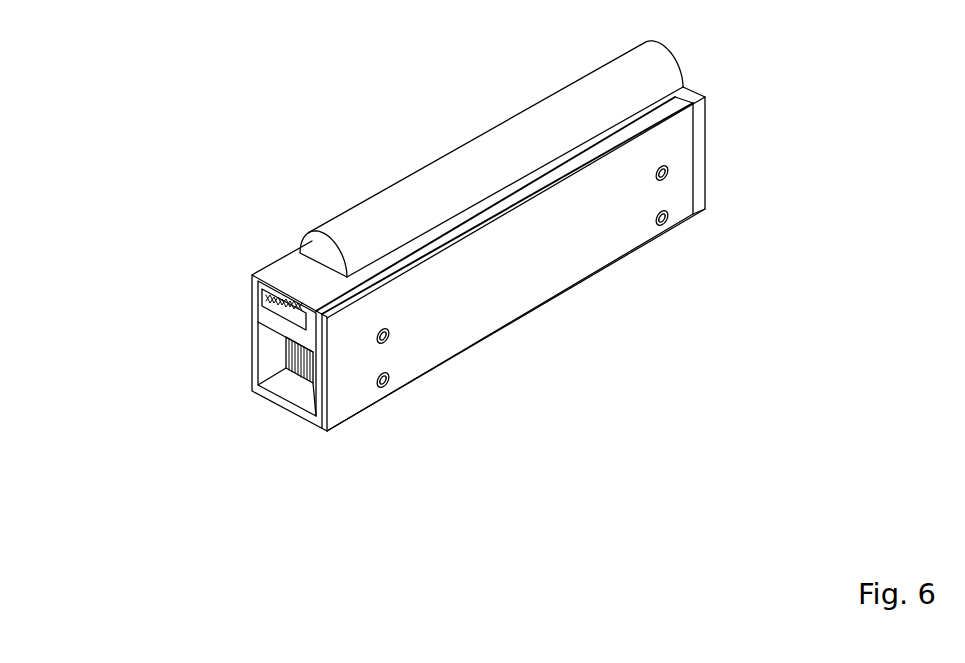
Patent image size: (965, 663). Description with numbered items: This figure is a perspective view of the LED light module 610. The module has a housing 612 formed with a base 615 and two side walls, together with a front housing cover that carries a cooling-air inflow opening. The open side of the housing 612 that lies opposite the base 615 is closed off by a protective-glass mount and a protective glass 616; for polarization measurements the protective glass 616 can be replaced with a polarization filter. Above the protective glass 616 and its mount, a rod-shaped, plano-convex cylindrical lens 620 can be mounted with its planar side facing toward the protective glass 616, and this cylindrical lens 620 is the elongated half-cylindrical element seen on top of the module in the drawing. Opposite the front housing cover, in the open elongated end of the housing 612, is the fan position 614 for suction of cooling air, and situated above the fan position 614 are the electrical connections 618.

The LED light module 610 is at (405, 117).
The housing 612 is at (562, 260).
The fan position 614 is at (292, 365).
The base 615 is at (295, 393).
The protective glass 616 is at (693, 90).
The electrical connections 618 is at (262, 305).
The half-cylindrical lens 620 is at (565, 108).